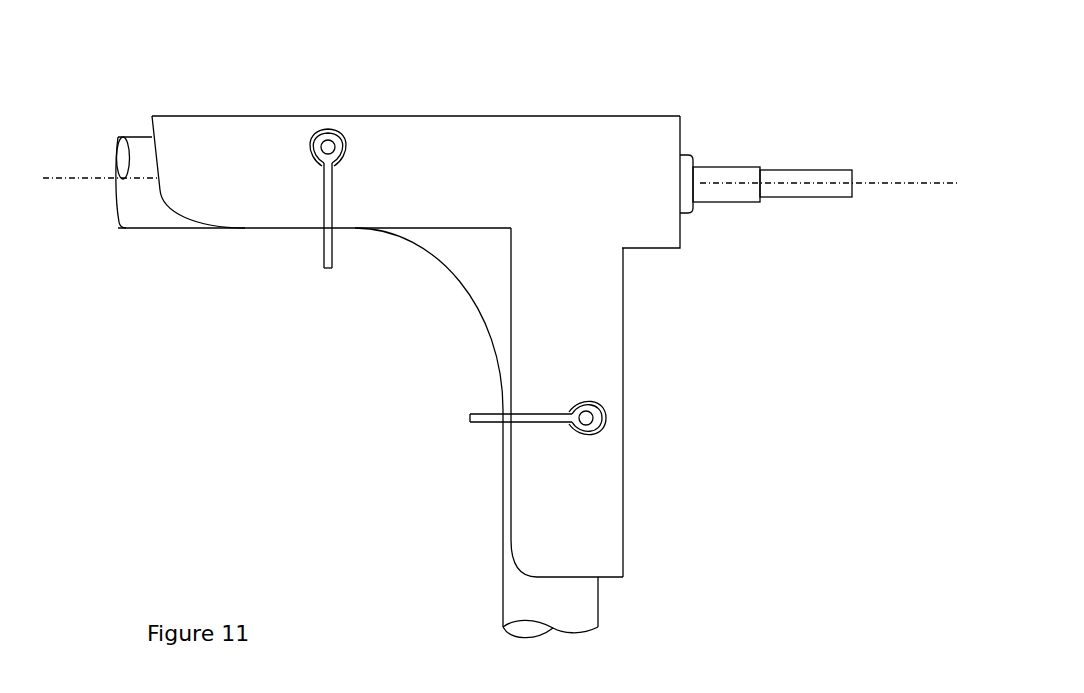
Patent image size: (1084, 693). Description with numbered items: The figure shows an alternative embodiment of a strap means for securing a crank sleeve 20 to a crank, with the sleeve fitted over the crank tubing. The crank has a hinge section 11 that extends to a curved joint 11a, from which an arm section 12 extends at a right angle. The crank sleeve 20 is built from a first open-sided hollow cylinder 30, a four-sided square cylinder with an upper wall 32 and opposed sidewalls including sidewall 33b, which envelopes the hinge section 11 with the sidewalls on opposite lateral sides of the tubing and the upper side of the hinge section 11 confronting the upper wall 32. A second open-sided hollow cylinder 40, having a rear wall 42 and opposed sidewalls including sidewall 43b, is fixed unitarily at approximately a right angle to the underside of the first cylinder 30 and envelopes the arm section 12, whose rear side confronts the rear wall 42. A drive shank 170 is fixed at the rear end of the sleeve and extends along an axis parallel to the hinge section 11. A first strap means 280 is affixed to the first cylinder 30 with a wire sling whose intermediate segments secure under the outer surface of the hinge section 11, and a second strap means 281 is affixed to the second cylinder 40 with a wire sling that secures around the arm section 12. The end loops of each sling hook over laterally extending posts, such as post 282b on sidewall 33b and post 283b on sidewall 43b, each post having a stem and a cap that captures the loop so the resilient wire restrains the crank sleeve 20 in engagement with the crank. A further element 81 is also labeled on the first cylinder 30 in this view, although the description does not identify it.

The hinge section 11 is at (152, 213).
The curved joint 11a is at (478, 272).
The arm section 12 is at (140, 500).
The crank sleeve 20 is at (718, 260).
The first open-sided hollow cylinder 30 is at (477, 50).
The upper wall 32 is at (300, 116).
The sidewall 33b is at (509, 157).
The second open-sided hollow cylinder 40 is at (653, 506).
The rear wall 42 is at (622, 365).
The sidewall 43b is at (537, 500).
The internal channel 81 is at (551, 192).
The drive shank 170 is at (757, 143).
The first strap means 280 is at (303, 282).
The second strap means 281 is at (455, 437).
The post 282b is at (335, 153).
The post 283b is at (600, 430).